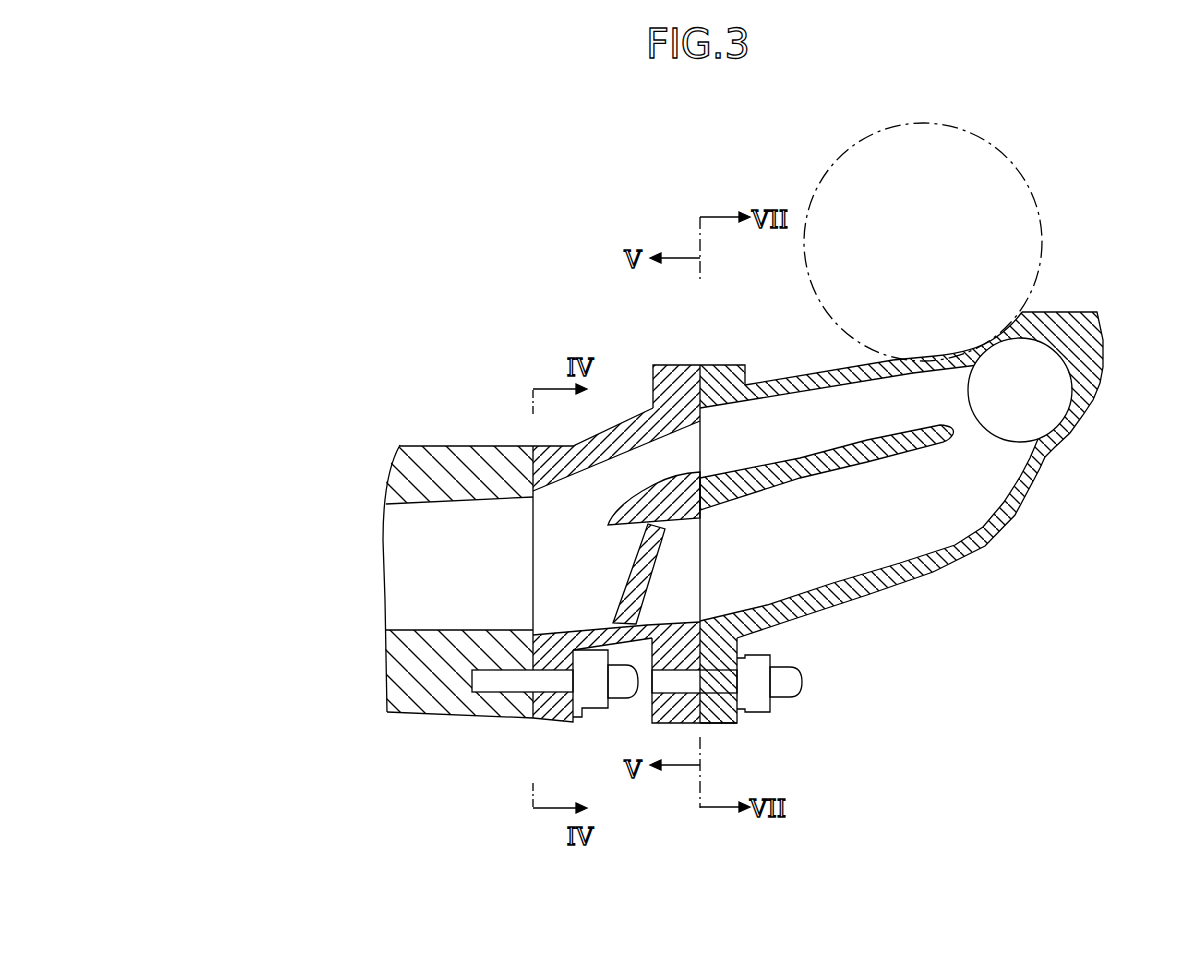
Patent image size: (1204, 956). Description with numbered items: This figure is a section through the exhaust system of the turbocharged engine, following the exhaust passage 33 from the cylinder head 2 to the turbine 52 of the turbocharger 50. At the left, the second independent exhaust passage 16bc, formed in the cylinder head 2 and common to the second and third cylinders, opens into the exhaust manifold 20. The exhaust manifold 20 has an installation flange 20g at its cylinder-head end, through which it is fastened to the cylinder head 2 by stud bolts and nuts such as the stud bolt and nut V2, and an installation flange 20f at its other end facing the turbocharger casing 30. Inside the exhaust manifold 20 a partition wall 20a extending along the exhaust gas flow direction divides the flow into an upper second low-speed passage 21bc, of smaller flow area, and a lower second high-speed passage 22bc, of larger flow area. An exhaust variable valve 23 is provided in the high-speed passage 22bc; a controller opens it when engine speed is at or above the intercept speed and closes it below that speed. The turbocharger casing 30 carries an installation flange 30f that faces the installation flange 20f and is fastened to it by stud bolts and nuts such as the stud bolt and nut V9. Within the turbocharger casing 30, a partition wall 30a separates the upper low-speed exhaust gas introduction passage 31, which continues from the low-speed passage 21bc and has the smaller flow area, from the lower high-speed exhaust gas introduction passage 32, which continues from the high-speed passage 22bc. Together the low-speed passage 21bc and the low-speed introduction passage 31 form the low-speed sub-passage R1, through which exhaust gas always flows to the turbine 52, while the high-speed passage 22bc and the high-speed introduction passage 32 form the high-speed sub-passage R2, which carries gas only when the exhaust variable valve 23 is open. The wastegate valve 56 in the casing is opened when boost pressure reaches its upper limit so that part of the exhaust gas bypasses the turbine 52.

The cylinder head 2 is at (424, 716).
The exhaust passage 33 is at (455, 468).
The second independent exhaust passage 16bc is at (418, 586).
The exhaust manifold 20 is at (640, 455).
The installation flange 20f is at (676, 365).
The installation flange 20g is at (547, 727).
The partition wall 20a is at (638, 503).
The second low-speed passage 21bc is at (648, 455).
The second high-speed passage 22bc is at (596, 582).
The exhaust variable valve 23 is at (650, 577).
The stud bolt and nut V2 is at (498, 683).
The stud bolt and nut V9 is at (787, 683).
The turbocharger casing 30 is at (953, 580).
The installation flange 30f is at (722, 365).
The low-speed exhaust gas introduction passage 31 is at (775, 408).
The partition wall 30a is at (800, 453).
The high-speed exhaust gas introduction passage 32 is at (907, 530).
The wastegate valve 56 is at (1026, 402).
The turbocharger 50 is at (972, 223).
The turbine 52 is at (986, 152).
The low-speed sub-passage R1 is at (721, 452).
The high-speed sub-passage R2 is at (721, 570).